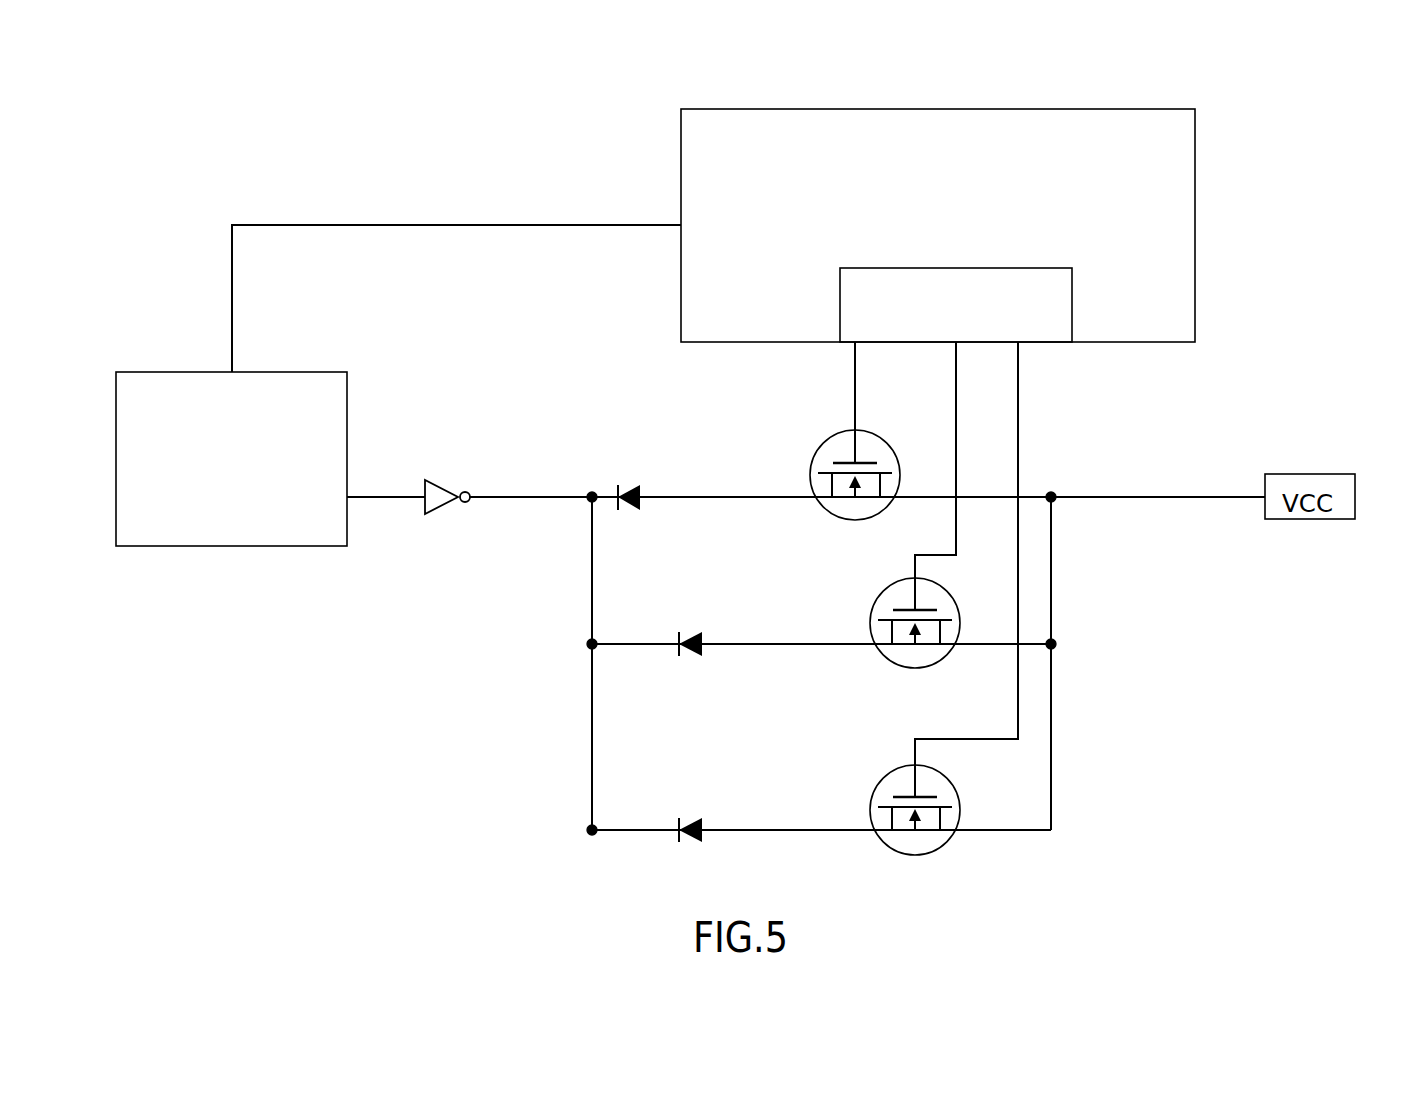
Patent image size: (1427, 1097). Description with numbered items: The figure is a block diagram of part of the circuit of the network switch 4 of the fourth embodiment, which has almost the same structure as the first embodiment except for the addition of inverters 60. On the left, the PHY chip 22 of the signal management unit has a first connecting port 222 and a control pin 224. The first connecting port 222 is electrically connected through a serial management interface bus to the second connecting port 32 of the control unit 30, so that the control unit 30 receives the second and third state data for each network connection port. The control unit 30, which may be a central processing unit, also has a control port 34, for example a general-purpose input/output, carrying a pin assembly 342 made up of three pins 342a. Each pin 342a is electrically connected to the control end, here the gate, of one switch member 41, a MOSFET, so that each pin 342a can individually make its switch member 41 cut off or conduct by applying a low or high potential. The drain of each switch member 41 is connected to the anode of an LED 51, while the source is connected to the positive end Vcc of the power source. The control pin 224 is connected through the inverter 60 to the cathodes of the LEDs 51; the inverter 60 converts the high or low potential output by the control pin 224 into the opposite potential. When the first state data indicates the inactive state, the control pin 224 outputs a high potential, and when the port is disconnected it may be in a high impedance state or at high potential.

The network switch 4 is at (1320, 125).
The PHY chip 22 is at (242, 522).
The first connecting port 222 is at (232, 370).
The control pin 224 is at (350, 490).
The control unit 30 is at (1149, 157).
The second connecting port 32 is at (681, 218).
The control port 34 is at (1040, 300).
The pin assembly 342 is at (1068, 373).
The pin 342a is at (855, 402).
The switch member 41 is at (815, 458).
The LED 51 is at (628, 488).
The inverter 60 is at (443, 512).